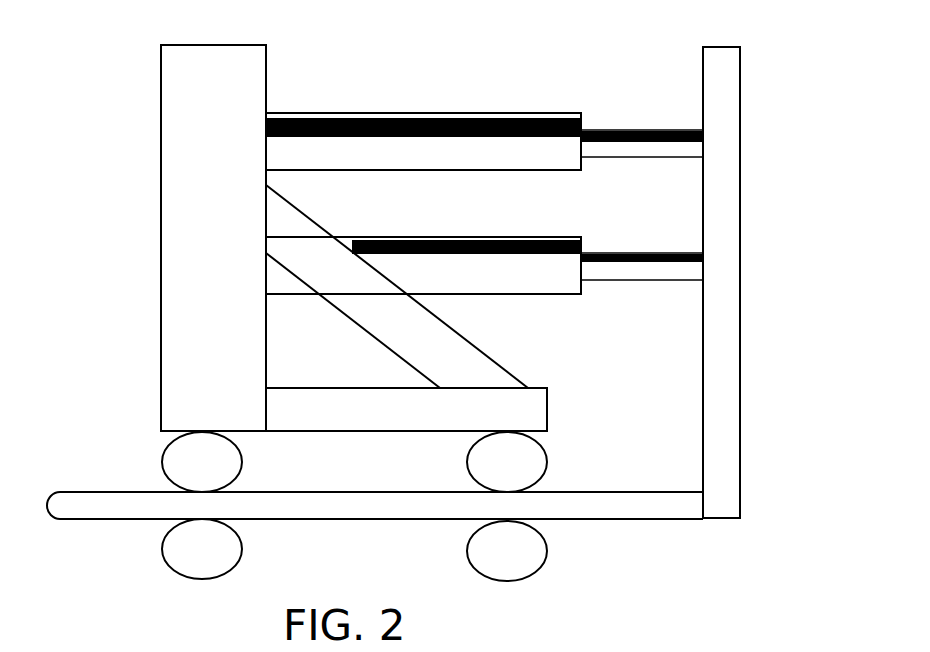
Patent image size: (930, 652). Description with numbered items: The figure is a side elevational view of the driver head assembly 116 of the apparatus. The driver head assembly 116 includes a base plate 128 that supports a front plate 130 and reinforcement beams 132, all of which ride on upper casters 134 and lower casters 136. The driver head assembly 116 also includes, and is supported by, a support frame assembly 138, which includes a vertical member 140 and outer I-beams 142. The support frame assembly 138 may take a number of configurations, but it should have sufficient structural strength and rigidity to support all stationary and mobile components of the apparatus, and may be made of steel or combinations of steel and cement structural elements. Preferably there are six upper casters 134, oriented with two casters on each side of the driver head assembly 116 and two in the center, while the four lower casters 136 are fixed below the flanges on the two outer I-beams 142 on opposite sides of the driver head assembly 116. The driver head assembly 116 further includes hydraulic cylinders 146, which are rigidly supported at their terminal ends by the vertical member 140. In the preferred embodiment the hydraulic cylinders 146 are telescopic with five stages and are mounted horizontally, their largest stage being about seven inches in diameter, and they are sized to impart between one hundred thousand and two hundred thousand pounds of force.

The driver head assembly 116 is at (132, 148).
The base plate 128 is at (533, 420).
The front plate 130 is at (187, 253).
The reinforcement beams 132 is at (477, 367).
The upper casters 134 is at (230, 465).
The lower casters 136 is at (225, 556).
The support frame assembly 138 is at (442, 475).
The vertical member 140 is at (725, 262).
The outer I-beams 142 is at (615, 512).
The hydraulic cylinders 146 is at (545, 118).